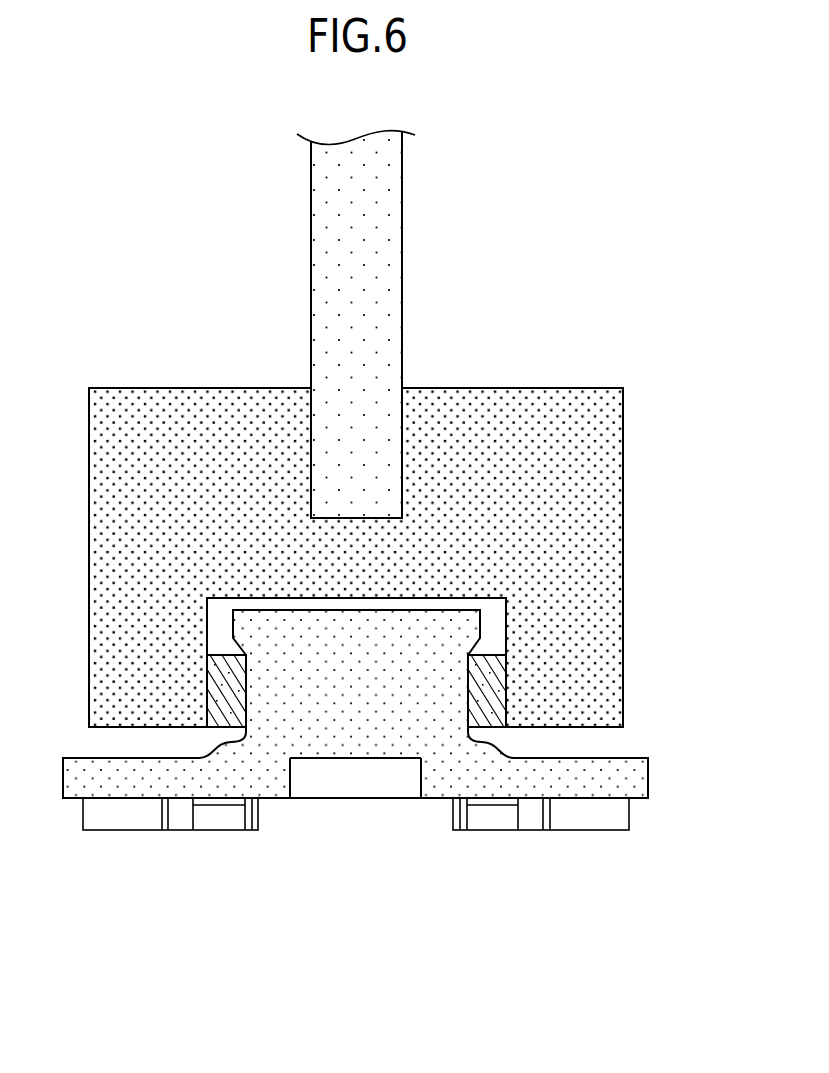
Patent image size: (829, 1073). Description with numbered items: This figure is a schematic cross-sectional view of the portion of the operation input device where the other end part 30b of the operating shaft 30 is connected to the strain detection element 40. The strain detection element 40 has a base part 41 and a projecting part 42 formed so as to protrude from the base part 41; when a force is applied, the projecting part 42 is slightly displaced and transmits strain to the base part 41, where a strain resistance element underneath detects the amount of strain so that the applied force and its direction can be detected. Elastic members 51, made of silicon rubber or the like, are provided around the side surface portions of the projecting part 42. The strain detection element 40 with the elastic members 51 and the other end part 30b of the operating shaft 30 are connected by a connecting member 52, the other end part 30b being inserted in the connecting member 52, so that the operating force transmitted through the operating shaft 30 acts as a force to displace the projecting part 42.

The operating shaft 30 is at (390, 257).
The other end part of the operating shaft 30b is at (357, 518).
The strain detection element 40 is at (355, 784).
The base part 41 is at (223, 777).
The projecting part 42 is at (303, 692).
The elastic members 51 is at (228, 714).
The connecting member 52 is at (610, 557).